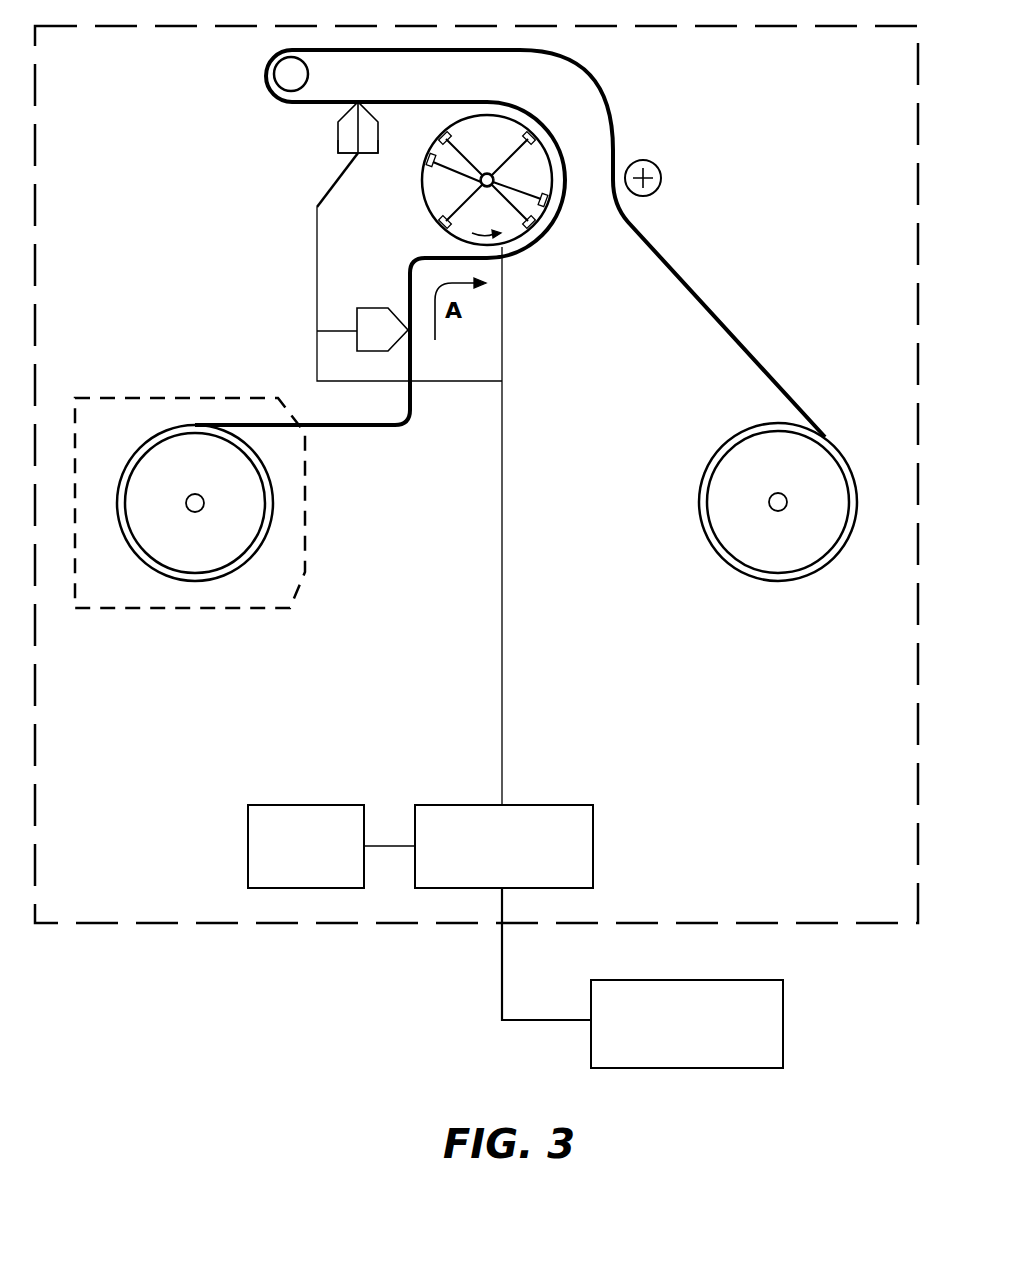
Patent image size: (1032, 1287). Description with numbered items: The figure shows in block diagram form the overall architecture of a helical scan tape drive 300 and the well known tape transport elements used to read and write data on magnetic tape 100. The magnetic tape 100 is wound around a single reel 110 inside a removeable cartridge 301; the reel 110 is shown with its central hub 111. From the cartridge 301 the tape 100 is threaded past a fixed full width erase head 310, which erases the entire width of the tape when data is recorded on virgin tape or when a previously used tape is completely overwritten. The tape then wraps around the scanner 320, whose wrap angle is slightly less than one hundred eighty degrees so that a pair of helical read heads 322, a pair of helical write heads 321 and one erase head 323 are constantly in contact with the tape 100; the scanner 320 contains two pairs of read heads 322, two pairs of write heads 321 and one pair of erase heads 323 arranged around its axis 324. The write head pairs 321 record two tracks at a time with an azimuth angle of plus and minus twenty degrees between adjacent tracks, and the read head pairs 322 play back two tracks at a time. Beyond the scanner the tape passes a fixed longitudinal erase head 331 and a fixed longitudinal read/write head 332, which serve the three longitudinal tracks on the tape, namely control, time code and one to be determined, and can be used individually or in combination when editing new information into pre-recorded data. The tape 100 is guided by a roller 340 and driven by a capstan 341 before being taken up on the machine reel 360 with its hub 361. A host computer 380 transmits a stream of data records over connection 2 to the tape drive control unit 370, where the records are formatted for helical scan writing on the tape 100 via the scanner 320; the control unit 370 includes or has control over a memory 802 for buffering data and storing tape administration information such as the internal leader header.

The tape drive 300 is at (288, 923).
The magnetic tape 100 is at (372, 425).
The tape guide roller 340 is at (270, 57).
The longitudinal read/write head 332 is at (337, 126).
The longitudinal erase head 331 is at (372, 154).
The scanner 320 is at (432, 218).
The helical write head 321 is at (535, 230).
The helical read head 322 is at (535, 134).
The erase head 323 is at (548, 203).
The scanner axis 324 is at (484, 181).
The capstan 341 is at (661, 183).
The full width erase head 310 is at (370, 352).
The cartridge 301 is at (307, 572).
The reel 110 is at (237, 517).
The cartridge reel hub 111 is at (190, 494).
The machine reel 360 is at (738, 542).
The machine reel hub 361 is at (775, 493).
The memory 802 is at (248, 838).
The tape drive control unit 370 is at (593, 843).
The host interface connection 2 is at (502, 975).
The host computer 380 is at (783, 1012).